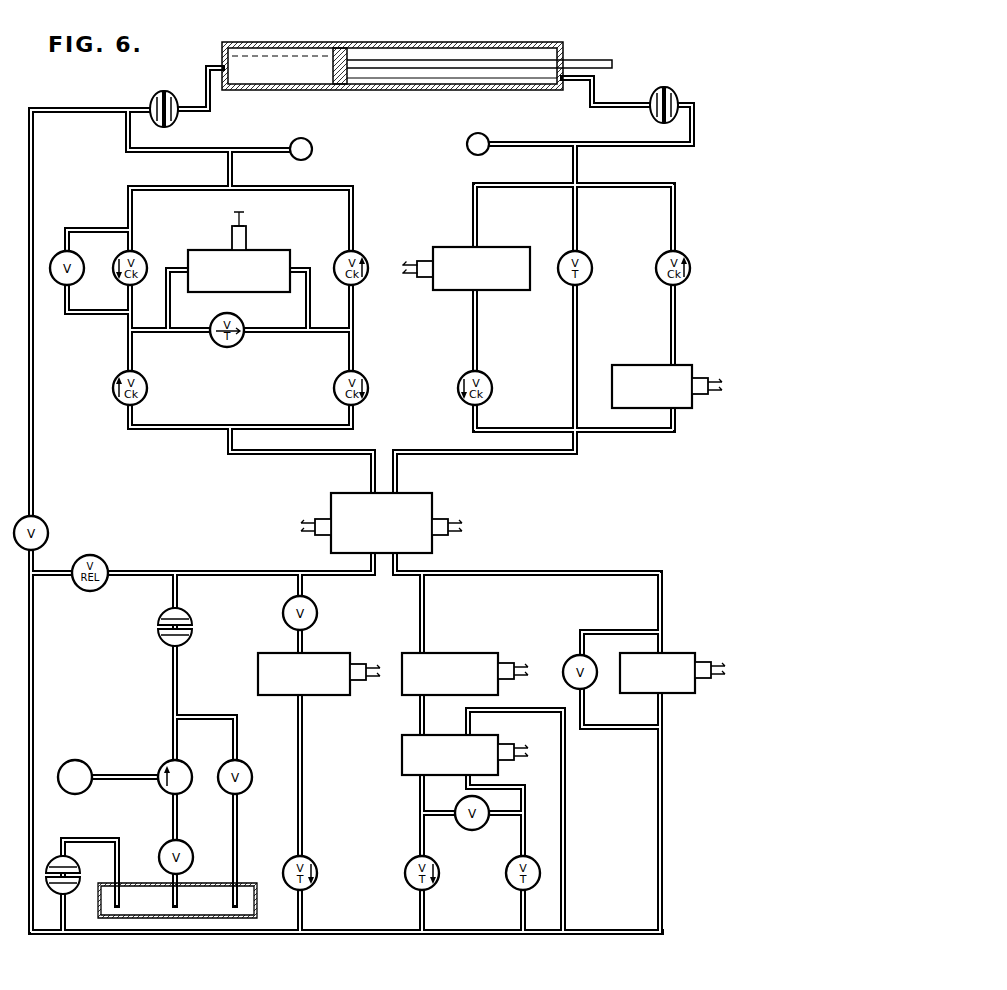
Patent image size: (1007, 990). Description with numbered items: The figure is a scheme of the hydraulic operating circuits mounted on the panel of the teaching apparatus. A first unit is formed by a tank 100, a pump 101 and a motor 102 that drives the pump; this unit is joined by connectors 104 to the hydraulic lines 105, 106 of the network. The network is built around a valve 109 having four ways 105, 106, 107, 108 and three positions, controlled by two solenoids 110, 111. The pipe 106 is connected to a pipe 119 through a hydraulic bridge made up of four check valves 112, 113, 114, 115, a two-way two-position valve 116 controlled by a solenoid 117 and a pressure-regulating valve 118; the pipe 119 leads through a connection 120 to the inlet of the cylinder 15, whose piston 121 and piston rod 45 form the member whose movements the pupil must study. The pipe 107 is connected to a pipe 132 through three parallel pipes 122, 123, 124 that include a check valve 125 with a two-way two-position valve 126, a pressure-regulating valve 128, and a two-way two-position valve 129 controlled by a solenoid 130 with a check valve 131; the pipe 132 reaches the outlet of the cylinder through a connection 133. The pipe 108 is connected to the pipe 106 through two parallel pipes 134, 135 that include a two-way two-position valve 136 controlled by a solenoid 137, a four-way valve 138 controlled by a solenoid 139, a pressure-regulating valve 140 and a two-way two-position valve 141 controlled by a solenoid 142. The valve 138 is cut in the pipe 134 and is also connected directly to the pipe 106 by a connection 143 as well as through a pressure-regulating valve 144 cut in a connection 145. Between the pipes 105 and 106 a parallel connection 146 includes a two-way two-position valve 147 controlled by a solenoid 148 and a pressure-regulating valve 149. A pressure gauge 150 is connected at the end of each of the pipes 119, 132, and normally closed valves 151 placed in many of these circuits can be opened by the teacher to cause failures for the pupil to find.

The cylinder 15 is at (372, 48).
The piston rod 45 is at (610, 60).
The tank 100 is at (257, 906).
The pump 101 is at (186, 762).
The motor 102 is at (81, 762).
The connectors 104 is at (187, 617).
The hydraulic line 105 is at (232, 571).
The hydraulic line 106 is at (500, 936).
The pipe 107 is at (404, 452).
The pipe 108 is at (416, 570).
The four-way three-position valve 109 is at (433, 505).
The solenoid 110 is at (320, 519).
The solenoid 111 is at (450, 526).
The check valve 112 is at (148, 391).
The check valve 113 is at (364, 259).
The check valve 114 is at (140, 265).
The check valve 115 is at (365, 380).
The two-way two-position valve 116 is at (272, 252).
The solenoid 117 is at (243, 236).
The pressure-regulating valve 118 is at (238, 343).
The pipe 119 is at (180, 150).
The connection 120 is at (175, 95).
The piston 121 is at (341, 44).
The pipe 122 is at (479, 332).
The pipe 123 is at (579, 332).
The pipe 124 is at (676, 318).
The check valve 125 is at (490, 386).
The two-way two-position valve 126 is at (512, 250).
The pressure-regulating valve 128 is at (592, 268).
The two-way two-position valve 129 is at (682, 365).
The solenoid 130 is at (707, 393).
The check valve 131 is at (684, 257).
The pipe 132 is at (596, 144).
The connection 133 is at (680, 98).
The pipe 134 is at (427, 628).
The pipe 135 is at (663, 607).
The two-way two-position valve 136 is at (482, 652).
The solenoid 137 is at (510, 661).
The four-way four-position valve 138 is at (401, 778).
The solenoid 139 is at (508, 745).
The pressure-regulating valve 140 is at (409, 879).
The two-way two-position valve 141 is at (682, 652).
The solenoid 142 is at (707, 679).
The connection 143 is at (569, 856).
The pressure-regulating valve 144 is at (509, 879).
The connection 145 is at (527, 822).
The connection 146 is at (306, 758).
The two-way two-position valve 147 is at (347, 652).
The solenoid 148 is at (362, 681).
The pressure-regulating valve 149 is at (312, 886).
The pressure-gauge 150 is at (313, 149).
The normally closed valve 151 is at (60, 257).